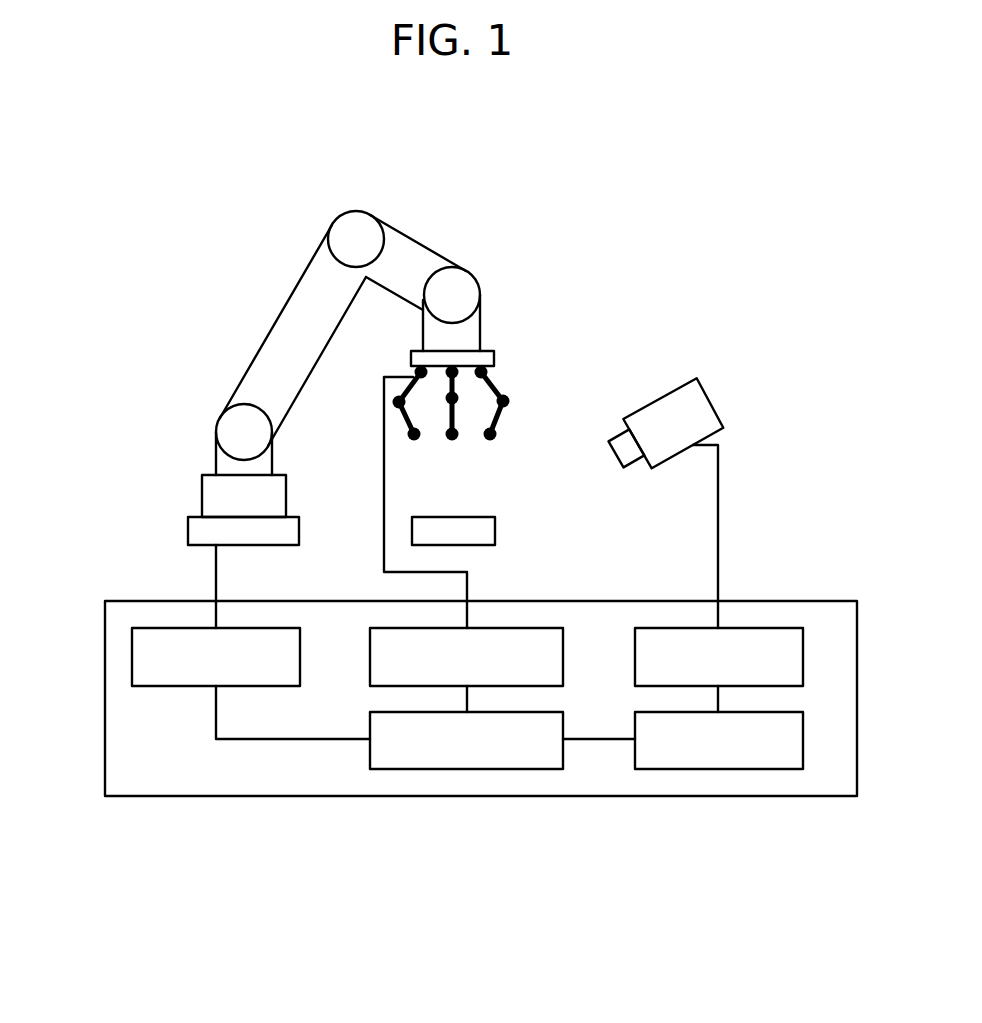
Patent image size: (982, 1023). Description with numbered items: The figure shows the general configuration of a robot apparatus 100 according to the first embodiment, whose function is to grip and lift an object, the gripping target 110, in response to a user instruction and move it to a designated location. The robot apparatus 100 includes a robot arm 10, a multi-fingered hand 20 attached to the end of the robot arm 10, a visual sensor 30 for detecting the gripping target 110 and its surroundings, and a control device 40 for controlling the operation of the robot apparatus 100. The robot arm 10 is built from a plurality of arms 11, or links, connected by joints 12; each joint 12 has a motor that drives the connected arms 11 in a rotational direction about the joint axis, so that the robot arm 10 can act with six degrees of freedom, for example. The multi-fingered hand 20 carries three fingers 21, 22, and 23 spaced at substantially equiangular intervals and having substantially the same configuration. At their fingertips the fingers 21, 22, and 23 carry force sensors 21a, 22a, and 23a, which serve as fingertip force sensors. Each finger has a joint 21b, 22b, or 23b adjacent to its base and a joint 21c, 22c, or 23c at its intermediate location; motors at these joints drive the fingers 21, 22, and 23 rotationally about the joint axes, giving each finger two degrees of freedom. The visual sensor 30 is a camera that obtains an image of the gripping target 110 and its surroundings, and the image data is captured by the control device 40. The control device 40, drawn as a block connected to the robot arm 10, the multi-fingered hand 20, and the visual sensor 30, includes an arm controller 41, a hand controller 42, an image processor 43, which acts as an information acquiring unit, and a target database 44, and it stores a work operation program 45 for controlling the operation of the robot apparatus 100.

The robot apparatus 100 is at (694, 276).
The robot arm 10 is at (265, 318).
The arm 11 is at (418, 243).
The joint 12 is at (350, 233).
The multi-fingered hand 20 is at (500, 360).
The finger 21 is at (396, 416).
The force sensor 21a is at (407, 436).
The joint 21b is at (410, 368).
The joint 21c is at (396, 398).
The finger 22 is at (430, 444).
The force sensor 22a is at (455, 440).
The joint 22b is at (457, 382).
The joint 22c is at (447, 404).
The finger 23 is at (503, 444).
The force sensor 23a is at (498, 434).
The joint 23b is at (493, 371).
The joint 23c is at (510, 401).
The visual sensor 30 is at (662, 395).
The control device 40 is at (105, 612).
The arm controller 41 is at (131, 647).
The hand controller 42 is at (530, 628).
The image processor 43 is at (776, 628).
The target database 44 is at (717, 770).
The work operation program 45 is at (521, 770).
The gripping target 110 is at (497, 528).